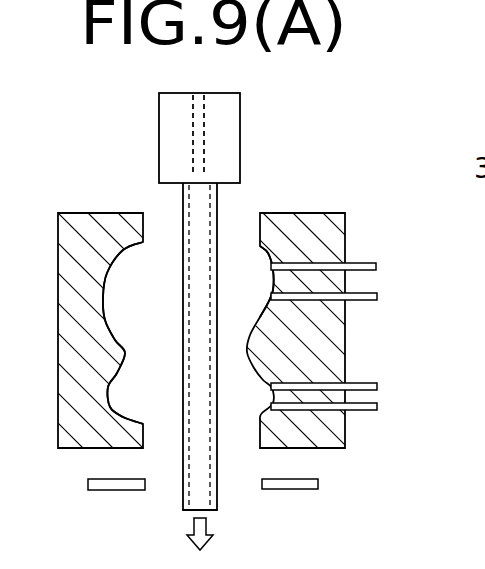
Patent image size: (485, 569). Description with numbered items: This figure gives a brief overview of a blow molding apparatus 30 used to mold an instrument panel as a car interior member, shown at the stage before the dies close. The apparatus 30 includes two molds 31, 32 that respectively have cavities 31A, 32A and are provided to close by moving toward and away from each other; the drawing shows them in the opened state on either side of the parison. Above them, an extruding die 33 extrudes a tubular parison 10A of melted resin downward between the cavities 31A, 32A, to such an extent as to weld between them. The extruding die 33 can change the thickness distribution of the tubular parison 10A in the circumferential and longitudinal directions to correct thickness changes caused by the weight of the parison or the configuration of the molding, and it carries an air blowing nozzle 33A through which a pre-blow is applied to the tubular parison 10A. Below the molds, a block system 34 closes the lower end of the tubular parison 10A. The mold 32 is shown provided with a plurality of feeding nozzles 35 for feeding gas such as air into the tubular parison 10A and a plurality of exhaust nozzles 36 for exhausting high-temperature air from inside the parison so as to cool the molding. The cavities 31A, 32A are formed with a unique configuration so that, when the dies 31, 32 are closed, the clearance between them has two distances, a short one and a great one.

The tubular parison 10A is at (183, 437).
The blow molding apparatus 30 is at (224, 303).
The mold 31 is at (80, 223).
The cavity 31A is at (125, 262).
The mold 32 is at (333, 222).
The cavity 32A is at (262, 256).
The extruding die 33 is at (158, 112).
The air blowing nozzle 33A is at (204, 135).
The block system 34 is at (275, 496).
The feeding nozzles 35 is at (376, 301).
The exhaust nozzles 36 is at (373, 262).